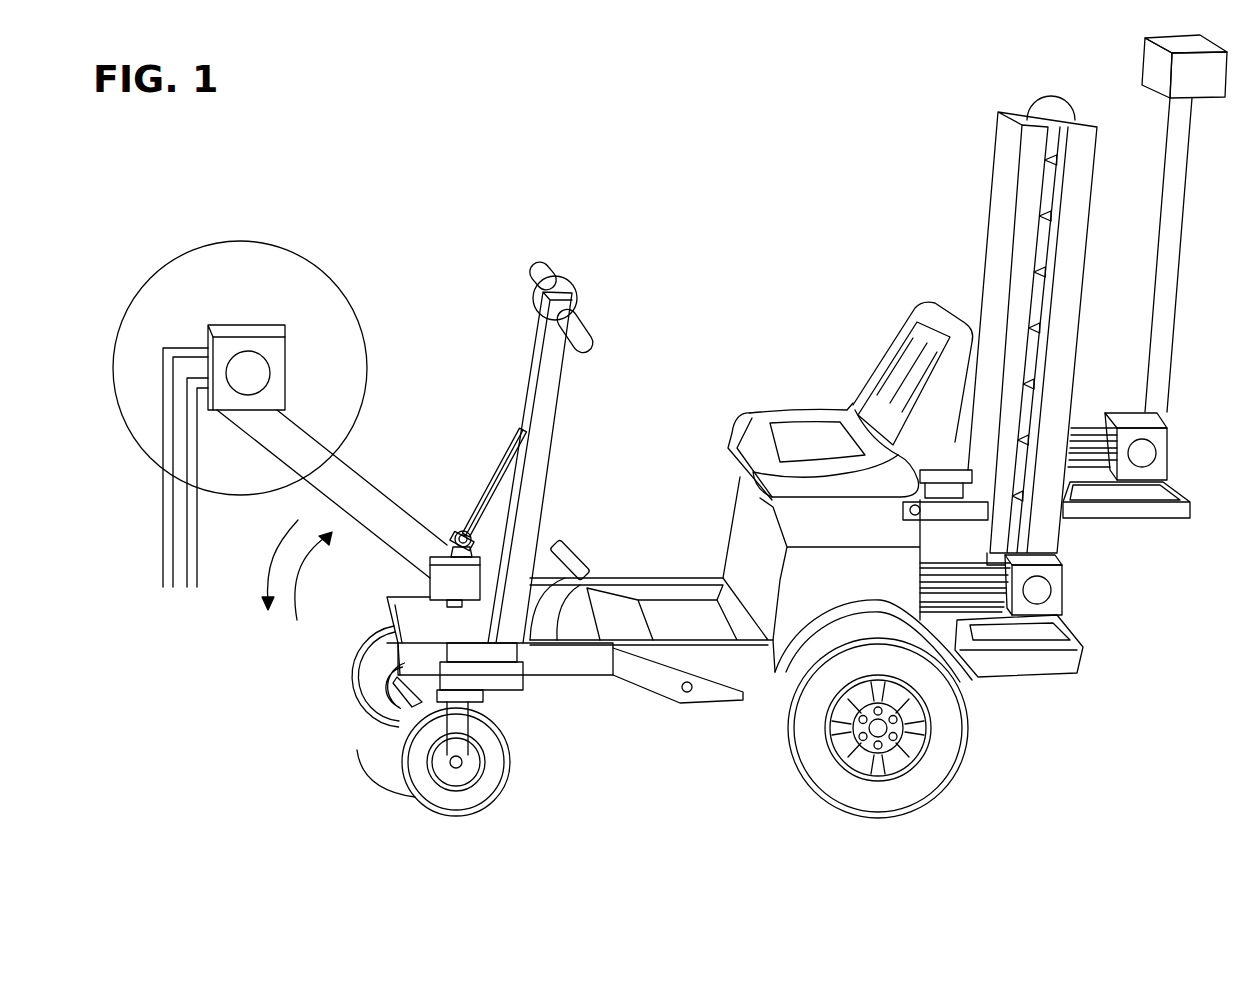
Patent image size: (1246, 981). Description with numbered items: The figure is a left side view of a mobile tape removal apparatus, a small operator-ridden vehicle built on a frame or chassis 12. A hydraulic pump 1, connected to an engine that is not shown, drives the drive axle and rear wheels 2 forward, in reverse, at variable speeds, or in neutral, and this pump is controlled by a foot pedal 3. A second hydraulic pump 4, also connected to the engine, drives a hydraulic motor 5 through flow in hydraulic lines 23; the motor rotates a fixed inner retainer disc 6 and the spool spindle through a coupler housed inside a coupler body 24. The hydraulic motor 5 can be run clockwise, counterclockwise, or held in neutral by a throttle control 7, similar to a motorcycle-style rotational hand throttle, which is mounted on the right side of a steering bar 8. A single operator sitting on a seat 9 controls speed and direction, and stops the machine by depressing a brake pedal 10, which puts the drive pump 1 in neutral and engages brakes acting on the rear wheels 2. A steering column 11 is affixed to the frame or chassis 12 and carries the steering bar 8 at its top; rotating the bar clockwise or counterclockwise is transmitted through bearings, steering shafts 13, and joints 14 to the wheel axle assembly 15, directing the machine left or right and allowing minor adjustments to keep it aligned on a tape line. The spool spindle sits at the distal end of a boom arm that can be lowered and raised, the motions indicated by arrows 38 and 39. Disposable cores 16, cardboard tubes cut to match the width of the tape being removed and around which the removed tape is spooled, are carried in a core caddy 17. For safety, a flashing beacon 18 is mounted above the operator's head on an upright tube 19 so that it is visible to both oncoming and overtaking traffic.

The hydraulic pump 1 is at (1042, 590).
The rear wheels 2 is at (882, 726).
The foot pedal 3 is at (717, 694).
The hydraulic pump 4 is at (1147, 455).
The hydraulic motor 5 is at (250, 366).
The fixed inner retainer disc 6 is at (276, 265).
The throttle control 7 is at (560, 284).
The steering bar 8 is at (587, 323).
The seat 9 is at (905, 355).
The brake pedal 10 is at (562, 610).
The steering column 11 is at (541, 470).
The frame or chassis 12 is at (572, 668).
The steering shafts 13 is at (495, 468).
The joints 14 is at (445, 538).
The wheel axle assembly 15 is at (455, 762).
The disposable cores 16 is at (1050, 110).
The core caddy 17 is at (995, 188).
The flashing beacon 18 is at (1150, 64).
The upright tube 19 is at (1178, 128).
The hydraulic lines 23 is at (193, 562).
The coupler body 24 is at (228, 346).
The arrow 38 is at (300, 570).
The arrow 39 is at (268, 560).